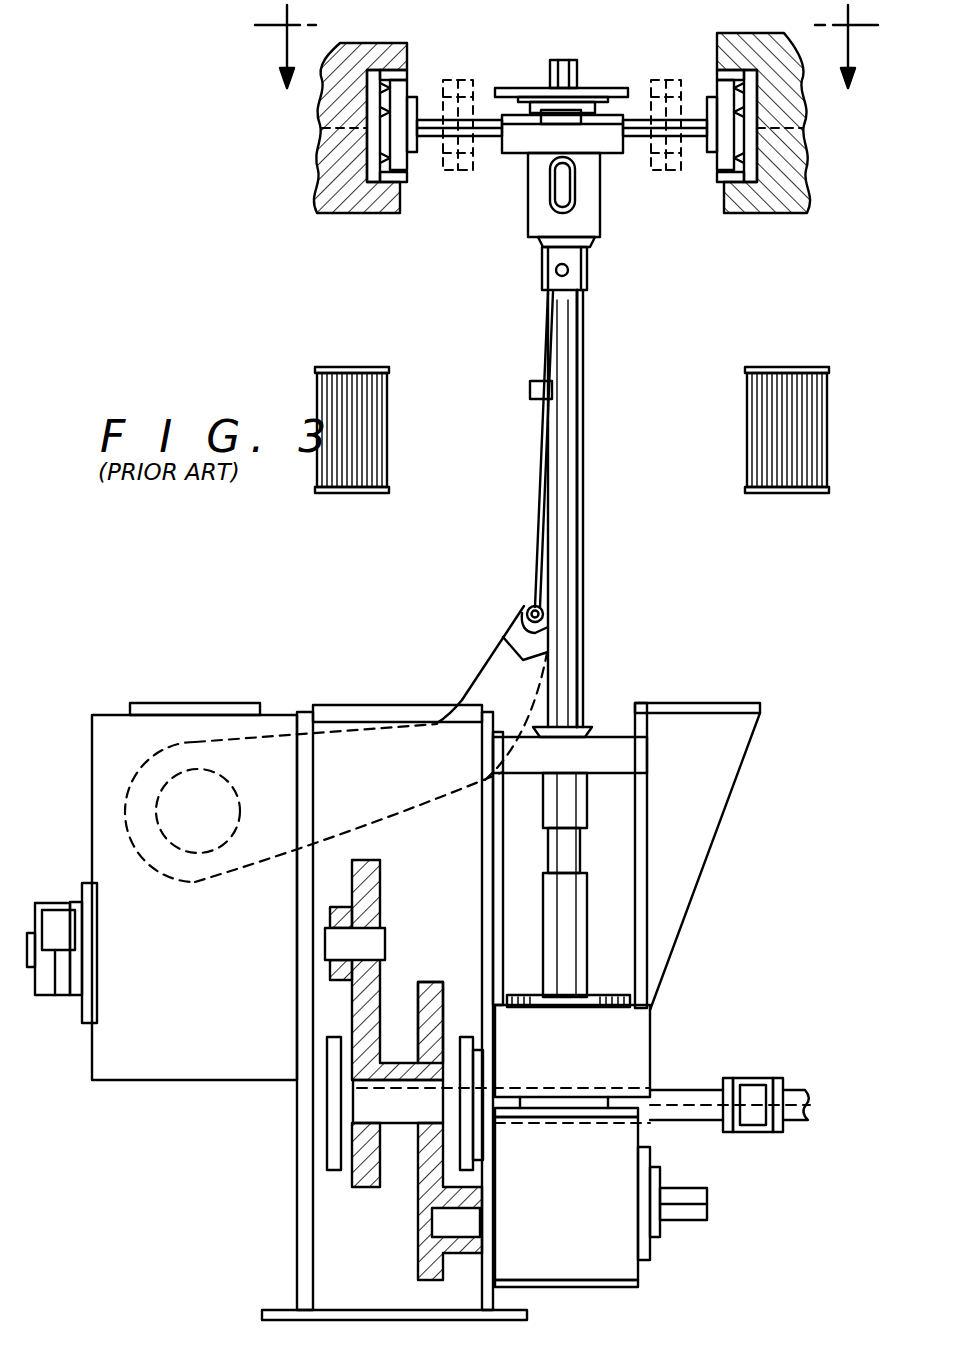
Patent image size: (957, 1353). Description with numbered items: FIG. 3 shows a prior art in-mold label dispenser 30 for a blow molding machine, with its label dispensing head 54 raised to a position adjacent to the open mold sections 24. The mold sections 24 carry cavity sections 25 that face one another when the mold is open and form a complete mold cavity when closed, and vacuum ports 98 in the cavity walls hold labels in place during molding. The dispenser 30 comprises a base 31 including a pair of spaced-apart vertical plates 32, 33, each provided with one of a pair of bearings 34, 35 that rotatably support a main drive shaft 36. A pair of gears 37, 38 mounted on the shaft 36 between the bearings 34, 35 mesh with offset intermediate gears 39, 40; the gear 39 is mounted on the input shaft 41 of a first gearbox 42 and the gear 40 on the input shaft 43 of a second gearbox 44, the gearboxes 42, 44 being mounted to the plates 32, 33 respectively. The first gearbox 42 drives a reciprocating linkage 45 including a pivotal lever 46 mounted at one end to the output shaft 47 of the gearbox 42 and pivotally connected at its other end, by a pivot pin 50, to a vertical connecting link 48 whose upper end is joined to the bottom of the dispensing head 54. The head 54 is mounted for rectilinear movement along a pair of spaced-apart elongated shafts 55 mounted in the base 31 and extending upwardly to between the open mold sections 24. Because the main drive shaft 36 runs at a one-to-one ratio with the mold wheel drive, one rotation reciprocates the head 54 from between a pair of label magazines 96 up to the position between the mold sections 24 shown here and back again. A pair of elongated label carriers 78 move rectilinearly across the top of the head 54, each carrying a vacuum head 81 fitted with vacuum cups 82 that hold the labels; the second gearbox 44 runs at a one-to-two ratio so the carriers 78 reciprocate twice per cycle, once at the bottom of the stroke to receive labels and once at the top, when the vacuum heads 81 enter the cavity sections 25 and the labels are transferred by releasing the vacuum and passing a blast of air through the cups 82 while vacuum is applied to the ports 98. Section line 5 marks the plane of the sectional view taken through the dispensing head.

The section line 5- 5 is at (566, 46).
The mold sections 24 is at (320, 112).
The cavity sections 25 is at (400, 72).
The in-mold label dispenser 30 is at (496, 234).
The label carriers 78 is at (455, 120).
The vacuum head 81 is at (400, 152).
The vacuum cups 82 is at (383, 160).
The vacuum ports 98 is at (330, 140).
The label dispensing head 54 is at (603, 230).
The elongated shafts 55 is at (577, 412).
The connecting link 48 is at (540, 445).
The pivot pin 50 is at (528, 597).
The reciprocating linkage 45 is at (505, 616).
The pivotal lever 46 is at (262, 830).
The output shaft 47 is at (183, 833).
The first gearbox 42 is at (135, 1060).
The base 31 is at (355, 705).
The vertical plate 32 is at (315, 777).
The vertical plate 33 is at (486, 833).
The bearing 35 is at (478, 1070).
The intermediate gear 39 is at (380, 893).
The input shaft 41 is at (382, 945).
The gear 37 is at (435, 985).
The bearing 34 is at (322, 1110).
The gear 38 is at (360, 1187).
The intermediate gear 40 is at (422, 1268).
The input shaft 43 is at (448, 1225).
The second gearbox 44 is at (607, 1260).
The main drive shaft 36 is at (792, 1092).
The label magazines 96 is at (345, 493).